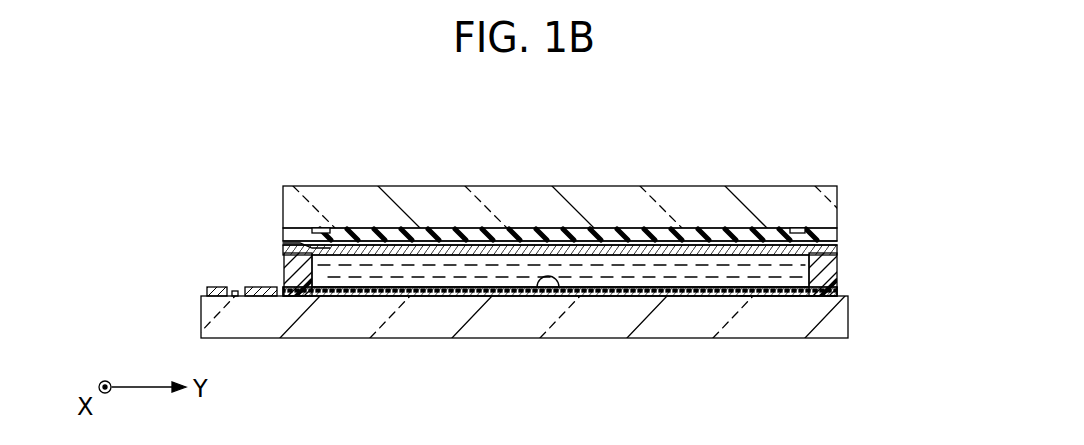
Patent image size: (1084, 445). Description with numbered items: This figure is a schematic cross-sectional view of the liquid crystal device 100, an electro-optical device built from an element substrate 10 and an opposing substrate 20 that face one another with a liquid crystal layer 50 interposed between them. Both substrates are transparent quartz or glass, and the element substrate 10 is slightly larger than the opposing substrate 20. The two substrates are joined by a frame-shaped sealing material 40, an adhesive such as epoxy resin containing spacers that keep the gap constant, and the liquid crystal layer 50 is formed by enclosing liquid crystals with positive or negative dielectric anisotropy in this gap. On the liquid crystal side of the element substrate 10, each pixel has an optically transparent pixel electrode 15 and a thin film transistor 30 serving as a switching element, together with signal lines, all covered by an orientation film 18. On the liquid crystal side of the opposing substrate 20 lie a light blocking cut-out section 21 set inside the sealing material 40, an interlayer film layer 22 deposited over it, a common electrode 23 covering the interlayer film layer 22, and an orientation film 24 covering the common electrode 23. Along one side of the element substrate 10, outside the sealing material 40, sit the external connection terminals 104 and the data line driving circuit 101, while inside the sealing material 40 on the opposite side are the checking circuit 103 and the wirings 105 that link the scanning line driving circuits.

The liquid crystal device 100 is at (728, 103).
The element substrate 10 is at (840, 318).
The opposing substrate 20 is at (830, 205).
The cut-out section 21 is at (326, 228).
The interlayer film layer 22 is at (468, 235).
The common electrode 23 is at (725, 241).
The orientation film 24 is at (622, 250).
The liquid crystal layer 50 is at (805, 283).
The orientation film 18 is at (538, 296).
The sealing material 40 is at (830, 256).
The pixel electrode 15 is at (410, 296).
The thin film transistor 30 is at (560, 291).
The external connection terminals 104 is at (217, 287).
The data line driving circuit 101 is at (258, 287).
The checking circuit 103 is at (768, 296).
The wirings 105 is at (795, 296).